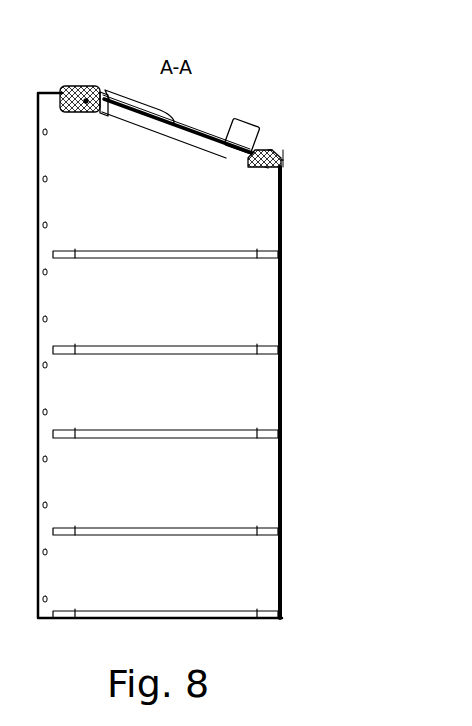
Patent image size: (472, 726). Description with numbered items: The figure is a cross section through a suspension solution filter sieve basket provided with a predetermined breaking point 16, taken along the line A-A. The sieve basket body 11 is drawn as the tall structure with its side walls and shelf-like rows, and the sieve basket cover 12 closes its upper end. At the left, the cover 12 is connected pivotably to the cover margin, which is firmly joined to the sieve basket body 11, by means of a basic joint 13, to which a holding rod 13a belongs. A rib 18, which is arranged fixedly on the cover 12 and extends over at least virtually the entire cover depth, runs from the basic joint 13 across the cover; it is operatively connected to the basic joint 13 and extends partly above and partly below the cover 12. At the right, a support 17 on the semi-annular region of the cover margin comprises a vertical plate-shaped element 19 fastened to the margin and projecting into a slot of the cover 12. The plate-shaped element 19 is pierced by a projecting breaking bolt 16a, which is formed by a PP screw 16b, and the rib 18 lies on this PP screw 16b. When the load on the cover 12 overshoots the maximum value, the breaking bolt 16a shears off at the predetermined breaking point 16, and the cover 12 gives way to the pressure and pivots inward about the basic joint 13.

The sieve basket body 11 is at (186, 236).
The sieve basket cover 12 is at (203, 136).
The basic joint 13 is at (88, 90).
The holding rod 13a is at (86, 103).
The predetermined breaking point 16 is at (250, 172).
The breaking bolt 16a is at (268, 168).
The PP screw 16b is at (272, 150).
The support 17 is at (305, 137).
The rib 18 is at (112, 92).
The plate-shaped element 19 is at (284, 159).